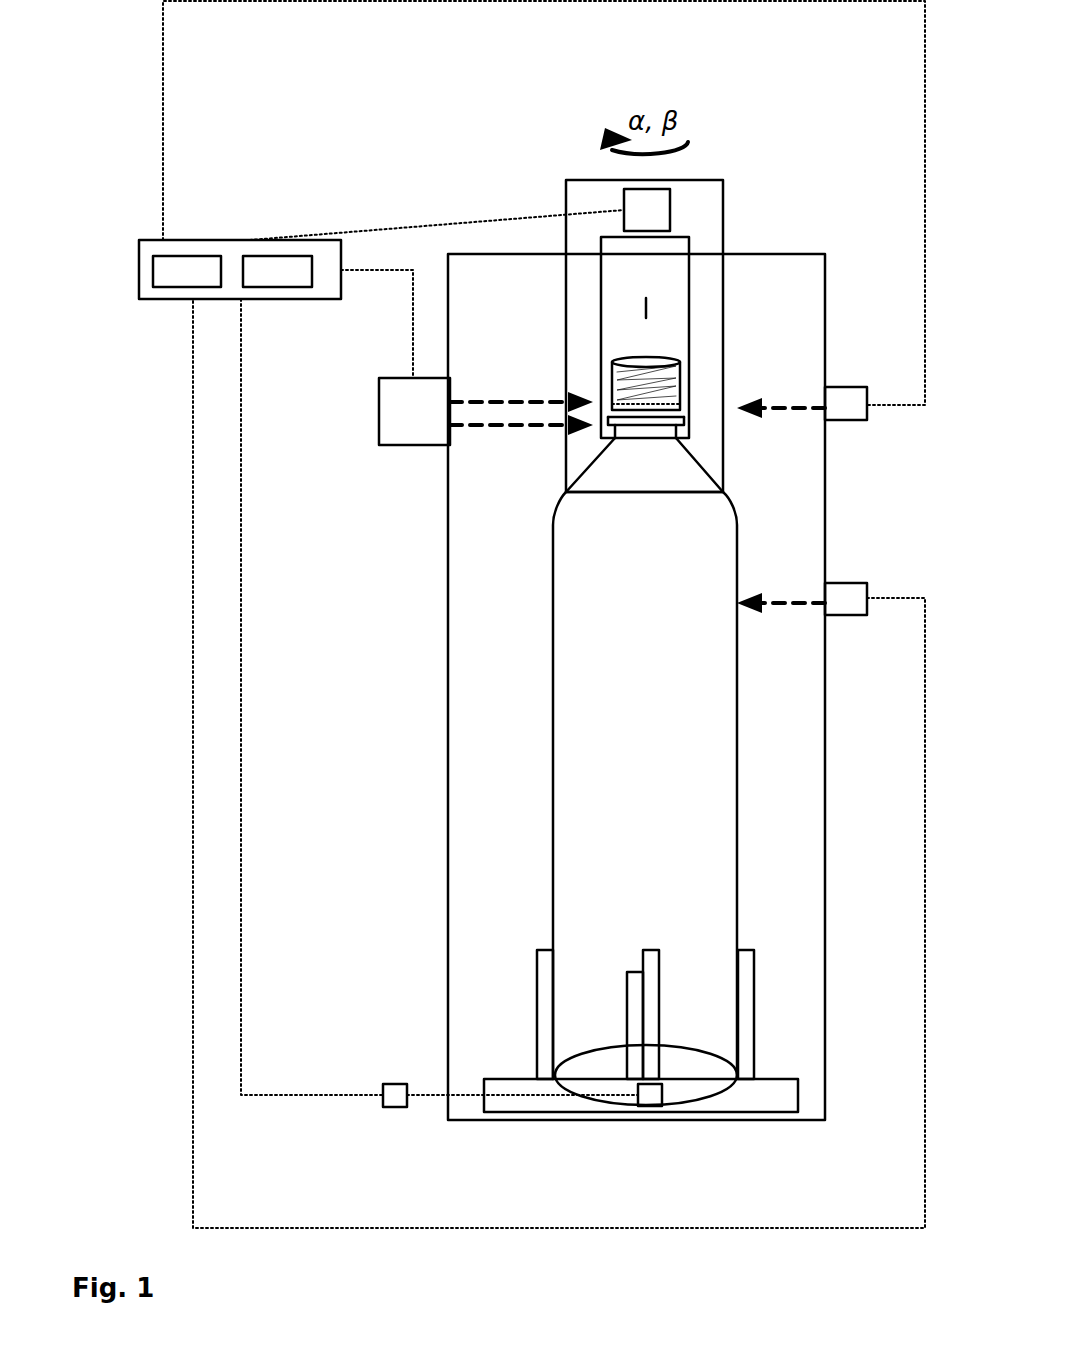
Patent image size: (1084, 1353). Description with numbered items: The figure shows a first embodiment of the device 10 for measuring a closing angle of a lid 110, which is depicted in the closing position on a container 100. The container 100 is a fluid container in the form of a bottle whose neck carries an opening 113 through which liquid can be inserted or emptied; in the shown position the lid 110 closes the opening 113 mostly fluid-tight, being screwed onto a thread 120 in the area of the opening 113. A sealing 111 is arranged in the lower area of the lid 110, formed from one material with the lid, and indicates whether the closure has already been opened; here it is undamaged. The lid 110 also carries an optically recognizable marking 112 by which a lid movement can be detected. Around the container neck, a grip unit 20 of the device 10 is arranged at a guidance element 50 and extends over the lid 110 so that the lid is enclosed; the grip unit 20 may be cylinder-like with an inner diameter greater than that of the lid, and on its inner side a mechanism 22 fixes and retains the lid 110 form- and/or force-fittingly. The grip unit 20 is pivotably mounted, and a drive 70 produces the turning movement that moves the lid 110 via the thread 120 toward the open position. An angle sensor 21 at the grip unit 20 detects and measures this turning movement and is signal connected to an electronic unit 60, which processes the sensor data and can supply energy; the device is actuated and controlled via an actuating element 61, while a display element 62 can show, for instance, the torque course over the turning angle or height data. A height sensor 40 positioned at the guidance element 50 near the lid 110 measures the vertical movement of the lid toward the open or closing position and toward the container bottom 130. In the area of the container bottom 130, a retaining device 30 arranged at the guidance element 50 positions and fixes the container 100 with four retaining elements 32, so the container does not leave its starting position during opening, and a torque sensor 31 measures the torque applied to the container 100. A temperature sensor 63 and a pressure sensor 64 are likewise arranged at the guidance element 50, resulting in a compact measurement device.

The device 10 is at (255, 118).
The grip unit 20 is at (723, 215).
The angle sensor 21 is at (670, 206).
The mechanism 22 is at (689, 283).
The retaining device 30 is at (465, 1040).
The torque sensor 31 is at (650, 1107).
The retaining elements 32 is at (537, 968).
The height sensor 40 is at (486, 411).
The guidance element 50 is at (500, 254).
The electronic unit 60 is at (203, 240).
The actuating element 61 is at (166, 273).
The display element 62 is at (280, 287).
The temperature sensor 63 is at (835, 583).
The pressure sensor 64 is at (838, 387).
The drive 70 is at (623, 188).
The container 100 is at (645, 758).
The lid 110 is at (670, 353).
The sealing 111 is at (615, 403).
The marking 112 is at (615, 357).
The opening 113 is at (618, 360).
The thread 120 is at (663, 392).
The container bottom 130 is at (720, 1090).